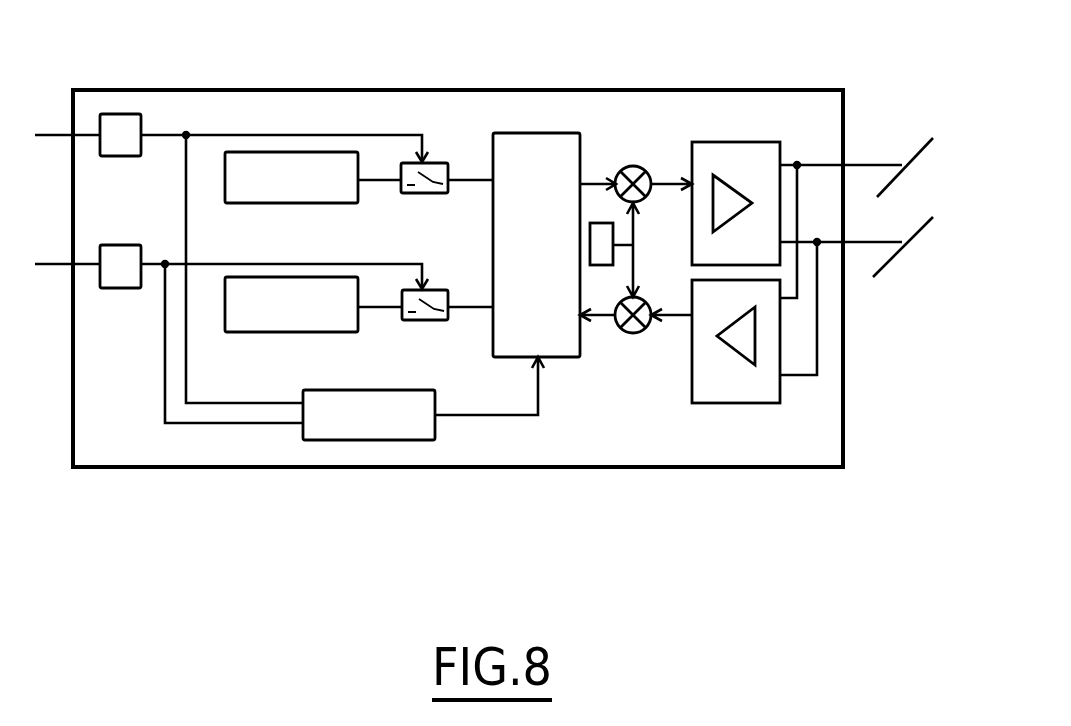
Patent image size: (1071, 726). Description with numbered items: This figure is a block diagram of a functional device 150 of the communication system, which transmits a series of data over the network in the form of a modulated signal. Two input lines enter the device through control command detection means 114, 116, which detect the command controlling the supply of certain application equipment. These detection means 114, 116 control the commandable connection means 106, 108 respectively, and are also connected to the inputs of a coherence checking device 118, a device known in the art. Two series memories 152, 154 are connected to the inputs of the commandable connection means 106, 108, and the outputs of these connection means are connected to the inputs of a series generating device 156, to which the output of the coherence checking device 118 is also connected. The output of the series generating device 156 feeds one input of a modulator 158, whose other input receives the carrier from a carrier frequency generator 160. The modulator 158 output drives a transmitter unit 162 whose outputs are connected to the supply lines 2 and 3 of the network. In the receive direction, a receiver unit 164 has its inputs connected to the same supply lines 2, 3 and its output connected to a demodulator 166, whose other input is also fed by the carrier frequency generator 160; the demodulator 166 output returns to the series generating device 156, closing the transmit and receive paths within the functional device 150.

The supply line 2 is at (921, 148).
The supply line 3 is at (921, 228).
The commandable connection means 106 is at (421, 194).
The commandable connection means 108 is at (421, 321).
The detection means 114 is at (121, 114).
The detection means 116 is at (115, 288).
The coherence checking device 118 is at (321, 440).
The functional device 150 is at (243, 90).
The series memory 152 is at (249, 204).
The series memory 154 is at (252, 333).
The series generating device 156 is at (493, 272).
The modulator 158 is at (633, 166).
The carrier frequency generator 160 is at (603, 265).
The transmitter unit 162 is at (738, 142).
The receiver unit 164 is at (692, 390).
The demodulator 166 is at (614, 331).